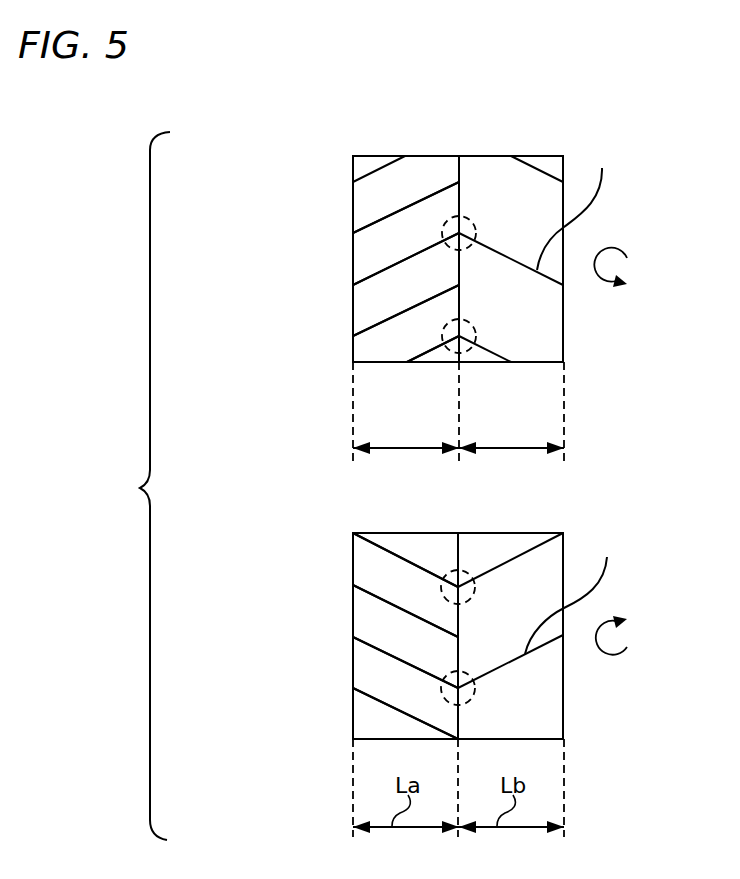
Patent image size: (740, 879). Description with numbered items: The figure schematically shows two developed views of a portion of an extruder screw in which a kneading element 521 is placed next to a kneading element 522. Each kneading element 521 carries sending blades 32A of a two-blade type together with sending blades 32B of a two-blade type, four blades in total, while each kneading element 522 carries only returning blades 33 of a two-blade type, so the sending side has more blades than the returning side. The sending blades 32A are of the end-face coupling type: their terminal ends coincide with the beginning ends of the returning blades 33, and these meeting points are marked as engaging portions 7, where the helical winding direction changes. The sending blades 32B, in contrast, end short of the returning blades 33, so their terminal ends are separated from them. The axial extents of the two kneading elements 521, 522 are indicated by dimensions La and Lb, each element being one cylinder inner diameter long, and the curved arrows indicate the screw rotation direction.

The kneading element 521 is at (353, 160).
The kneading element 522 is at (564, 322).
The sending blade 32A is at (408, 257).
The sending blade 32B is at (408, 206).
The returning blade 33 is at (545, 173).
The engaging portion 7 is at (465, 247).
The length La is at (392, 447).
The length Lb is at (497, 447).